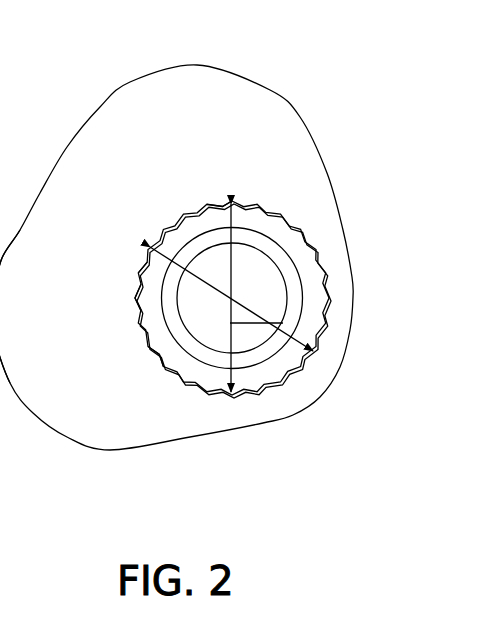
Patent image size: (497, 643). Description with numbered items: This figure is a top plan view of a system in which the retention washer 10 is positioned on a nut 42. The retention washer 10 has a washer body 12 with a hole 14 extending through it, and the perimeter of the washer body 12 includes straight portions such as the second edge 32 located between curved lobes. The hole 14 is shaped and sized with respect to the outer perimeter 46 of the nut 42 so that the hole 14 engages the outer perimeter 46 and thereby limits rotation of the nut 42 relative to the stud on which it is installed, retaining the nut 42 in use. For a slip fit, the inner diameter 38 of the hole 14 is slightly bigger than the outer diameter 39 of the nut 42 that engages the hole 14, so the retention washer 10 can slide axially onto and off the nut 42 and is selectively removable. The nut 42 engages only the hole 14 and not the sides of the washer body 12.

The retention washer 10 is at (323, 86).
The washer body 12 is at (53, 393).
The hole 14 is at (260, 378).
The second edge 32 is at (258, 189).
The inner diameter 38 is at (207, 212).
The outer diameter 39 is at (238, 442).
The nut 42 is at (137, 300).
The outer perimeter 46 is at (168, 367).